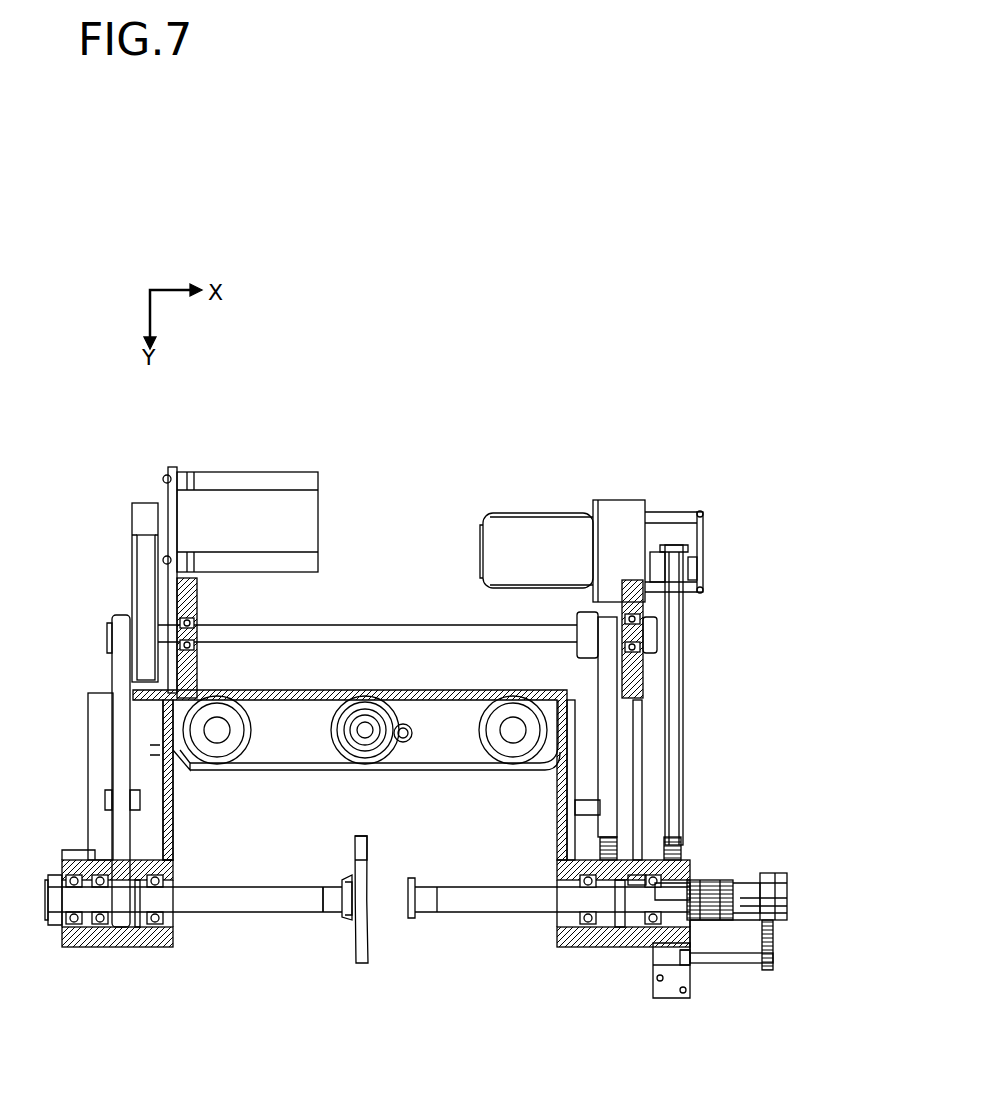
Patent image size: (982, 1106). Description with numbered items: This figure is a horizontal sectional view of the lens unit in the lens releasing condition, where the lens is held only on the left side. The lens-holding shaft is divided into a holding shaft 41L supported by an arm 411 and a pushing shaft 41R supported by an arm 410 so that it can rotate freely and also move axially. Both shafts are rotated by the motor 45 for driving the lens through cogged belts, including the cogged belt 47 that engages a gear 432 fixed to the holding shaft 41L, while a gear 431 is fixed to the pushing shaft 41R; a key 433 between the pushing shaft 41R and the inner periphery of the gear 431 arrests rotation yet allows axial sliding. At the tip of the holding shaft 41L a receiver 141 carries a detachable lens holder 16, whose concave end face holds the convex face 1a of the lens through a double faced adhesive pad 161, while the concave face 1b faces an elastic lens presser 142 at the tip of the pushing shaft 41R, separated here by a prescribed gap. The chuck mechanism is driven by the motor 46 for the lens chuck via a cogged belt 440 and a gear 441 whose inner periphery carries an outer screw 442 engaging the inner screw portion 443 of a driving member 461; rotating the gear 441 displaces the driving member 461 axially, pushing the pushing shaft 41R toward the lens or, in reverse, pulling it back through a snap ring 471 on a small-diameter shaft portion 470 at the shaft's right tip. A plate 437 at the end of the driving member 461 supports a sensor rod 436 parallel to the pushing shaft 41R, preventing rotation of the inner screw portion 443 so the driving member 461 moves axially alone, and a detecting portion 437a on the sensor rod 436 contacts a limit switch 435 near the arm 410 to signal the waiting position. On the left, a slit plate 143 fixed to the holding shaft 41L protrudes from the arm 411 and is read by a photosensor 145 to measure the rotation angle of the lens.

The motor for driving the lens 45 is at (246, 472).
The motor for the lens chuck 46 is at (622, 505).
The cogged belt 47 is at (123, 722).
The cogged belt 440 is at (680, 632).
The key 433 is at (655, 883).
The driving member 461 is at (717, 877).
The gear 441 is at (672, 880).
The inner screw portion 443 is at (733, 897).
The shaft portion 470 is at (747, 887).
The snap ring 471 is at (787, 905).
The plate 437 is at (773, 933).
The sensor rod 436 is at (723, 963).
The limit switch 435 is at (677, 985).
The detecting portion 437a is at (678, 955).
The outer screw 442 is at (665, 895).
The gear 431 is at (576, 947).
The arm 410 is at (558, 822).
The arm 411 is at (173, 825).
The double faced adhesive pad 161 is at (350, 885).
The lens holder 16 is at (347, 890).
The concave face 1b is at (367, 860).
The convex face 1a is at (358, 950).
The receiver of the lens holder 141 is at (333, 913).
The lens presser 142 is at (417, 920).
The holding shaft 41L is at (252, 905).
The pushing shaft 41R is at (468, 903).
The gear 432 is at (125, 950).
The slit plate 143 is at (48, 927).
The photosensor 145 is at (42, 862).